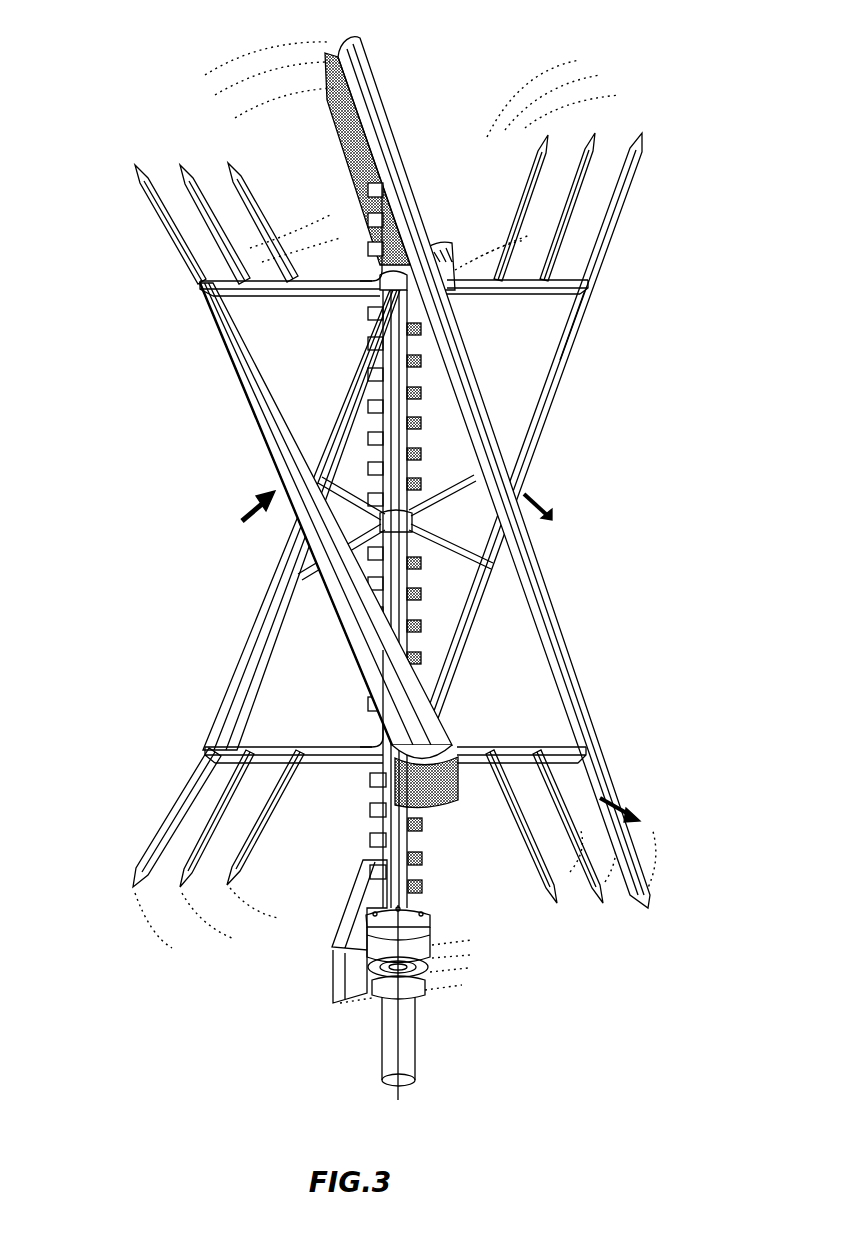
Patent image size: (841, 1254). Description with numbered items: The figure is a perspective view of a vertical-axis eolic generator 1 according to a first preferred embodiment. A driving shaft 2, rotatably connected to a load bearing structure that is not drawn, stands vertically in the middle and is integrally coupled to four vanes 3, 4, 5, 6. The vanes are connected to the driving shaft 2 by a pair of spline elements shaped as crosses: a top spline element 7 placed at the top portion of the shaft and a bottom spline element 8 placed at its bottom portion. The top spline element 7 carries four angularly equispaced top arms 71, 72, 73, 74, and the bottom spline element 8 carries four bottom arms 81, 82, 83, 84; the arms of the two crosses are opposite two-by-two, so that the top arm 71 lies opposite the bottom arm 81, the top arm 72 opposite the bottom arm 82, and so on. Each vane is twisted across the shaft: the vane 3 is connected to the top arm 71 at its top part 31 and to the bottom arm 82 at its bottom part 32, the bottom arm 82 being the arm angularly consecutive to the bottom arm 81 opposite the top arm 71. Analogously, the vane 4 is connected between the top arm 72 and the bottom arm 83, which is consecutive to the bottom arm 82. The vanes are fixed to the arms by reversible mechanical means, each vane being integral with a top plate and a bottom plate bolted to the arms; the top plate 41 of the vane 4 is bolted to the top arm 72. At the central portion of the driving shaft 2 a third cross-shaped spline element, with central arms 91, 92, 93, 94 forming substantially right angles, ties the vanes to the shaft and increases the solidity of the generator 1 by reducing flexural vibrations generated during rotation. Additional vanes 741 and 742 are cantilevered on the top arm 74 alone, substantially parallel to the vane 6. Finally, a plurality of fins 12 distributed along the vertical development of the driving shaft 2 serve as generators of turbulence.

The vertical-axis eolic generator 1 is at (125, 984).
The driving shaft 2 is at (367, 382).
The vane 3 is at (392, 86).
The top part of vane 31 is at (378, 137).
The bottom part of vane 32 is at (442, 730).
The vane 4 is at (622, 196).
The top plate 41 is at (565, 297).
The vane 5 is at (243, 660).
The vane 6 is at (263, 403).
The top spline element 7 is at (365, 274).
The top arm 71 is at (387, 250).
The top arm 72 is at (567, 333).
The top arm 73 is at (367, 331).
The top arm 74 is at (240, 290).
The additional vane 741 is at (187, 165).
The additional vane 742 is at (230, 163).
The bottom spline element 8 is at (361, 742).
The bottom arm 81 is at (368, 690).
The bottom arm 82 is at (577, 773).
The bottom arm 83 is at (372, 790).
The bottom arm 84 is at (233, 760).
The central arm 91 is at (328, 480).
The central arm 92 is at (470, 493).
The central arm 93 is at (480, 580).
The central arm 94 is at (310, 593).
The fins 12 is at (423, 421).